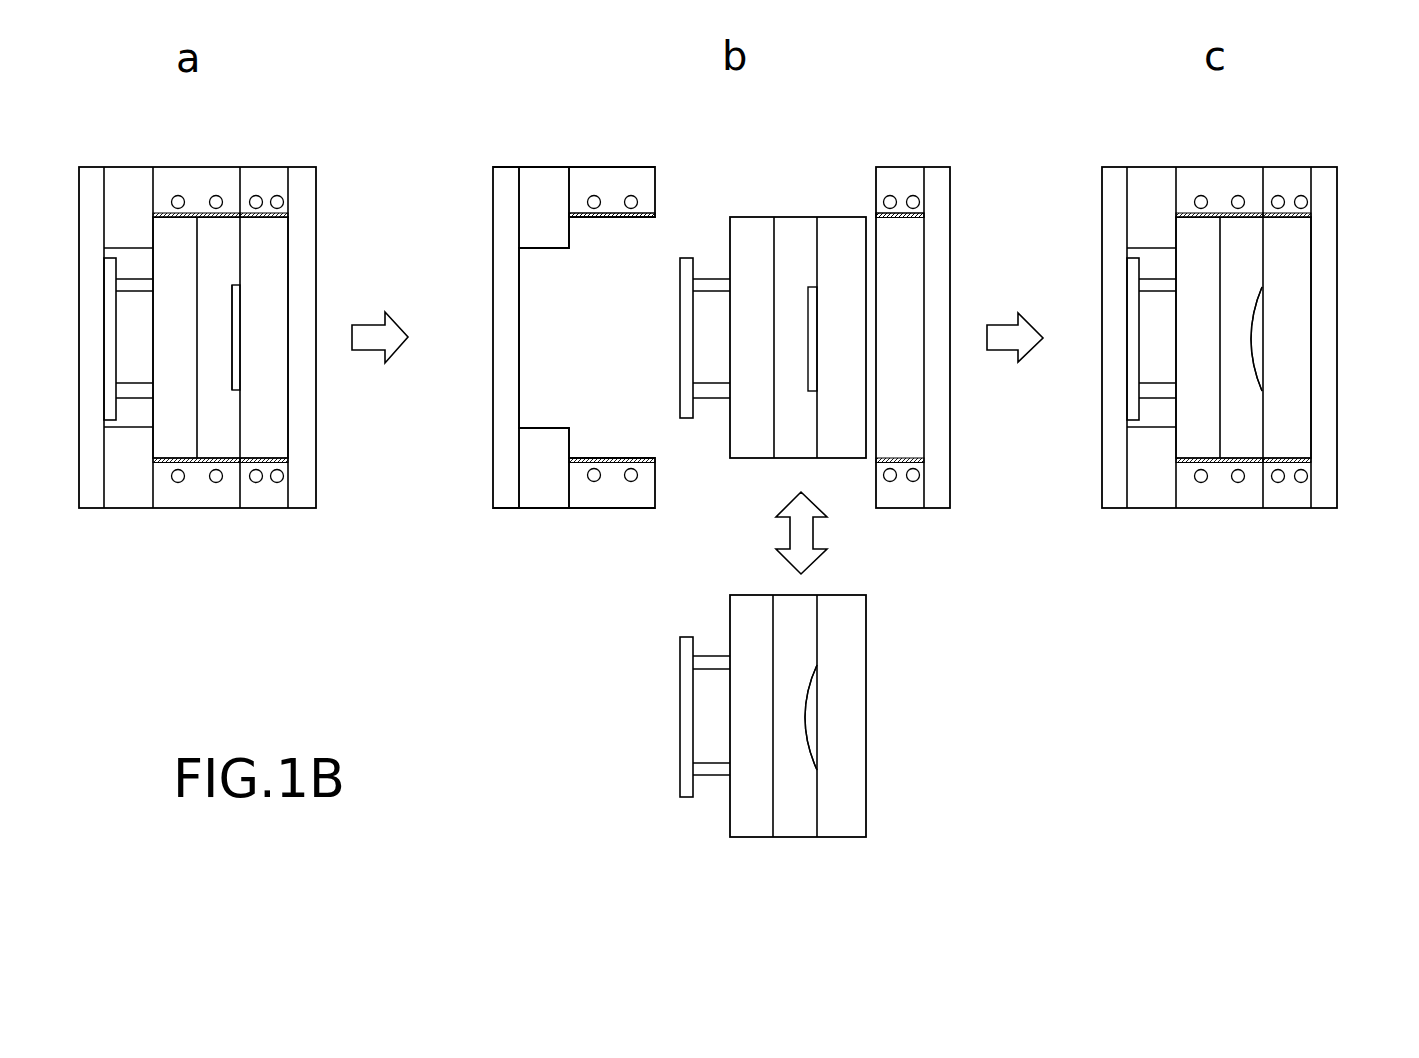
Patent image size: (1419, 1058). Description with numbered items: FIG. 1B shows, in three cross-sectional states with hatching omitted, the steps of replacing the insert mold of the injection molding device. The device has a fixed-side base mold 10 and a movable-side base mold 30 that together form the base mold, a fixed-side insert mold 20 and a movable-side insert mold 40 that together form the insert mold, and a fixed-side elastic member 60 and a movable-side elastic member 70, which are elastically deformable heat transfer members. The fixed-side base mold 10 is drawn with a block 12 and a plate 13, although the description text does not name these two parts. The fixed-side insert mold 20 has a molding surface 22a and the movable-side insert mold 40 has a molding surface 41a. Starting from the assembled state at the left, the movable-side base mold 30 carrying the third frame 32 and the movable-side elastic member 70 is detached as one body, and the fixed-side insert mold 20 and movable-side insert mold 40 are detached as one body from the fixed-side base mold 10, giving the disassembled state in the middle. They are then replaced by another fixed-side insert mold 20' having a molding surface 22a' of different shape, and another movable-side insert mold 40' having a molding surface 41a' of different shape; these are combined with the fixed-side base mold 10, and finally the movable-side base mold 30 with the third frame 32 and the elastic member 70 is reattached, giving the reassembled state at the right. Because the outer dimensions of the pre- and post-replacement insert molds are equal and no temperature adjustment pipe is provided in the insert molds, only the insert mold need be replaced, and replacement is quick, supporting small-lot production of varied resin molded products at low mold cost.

The fixed-side base mold 10 is at (79, 167).
The spacer block 12 is at (541, 190).
The fixing plate 13 is at (199, 190).
The fixed-side insert mold 20 is at (640, 427).
The molding surface 22a is at (524, 313).
The movable-side base mold 30 is at (316, 509).
The third frame 32 is at (268, 185).
The movable-side insert mold 40 is at (509, 294).
The molding surface 41a is at (313, 341).
The fixed-side elastic member 60 is at (602, 222).
The movable-side elastic member 70 is at (900, 220).
The fixed-side insert mold 20' is at (706, 776).
The molding surface 22a' is at (1111, 523).
The movable-side insert mold 40' is at (1068, 565).
The molding surface 41a' is at (1110, 528).